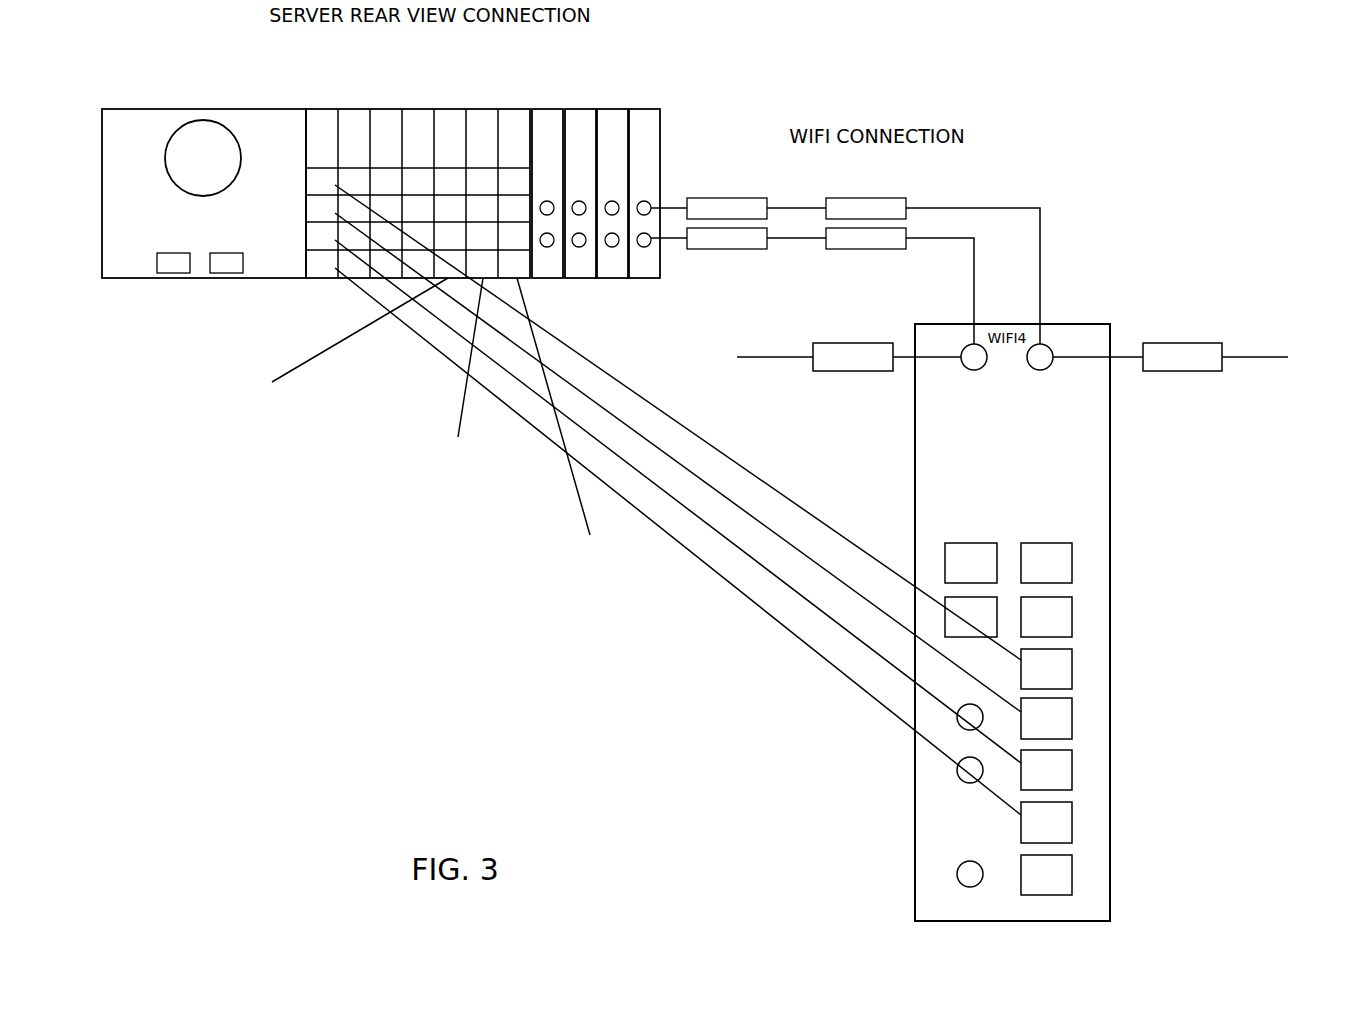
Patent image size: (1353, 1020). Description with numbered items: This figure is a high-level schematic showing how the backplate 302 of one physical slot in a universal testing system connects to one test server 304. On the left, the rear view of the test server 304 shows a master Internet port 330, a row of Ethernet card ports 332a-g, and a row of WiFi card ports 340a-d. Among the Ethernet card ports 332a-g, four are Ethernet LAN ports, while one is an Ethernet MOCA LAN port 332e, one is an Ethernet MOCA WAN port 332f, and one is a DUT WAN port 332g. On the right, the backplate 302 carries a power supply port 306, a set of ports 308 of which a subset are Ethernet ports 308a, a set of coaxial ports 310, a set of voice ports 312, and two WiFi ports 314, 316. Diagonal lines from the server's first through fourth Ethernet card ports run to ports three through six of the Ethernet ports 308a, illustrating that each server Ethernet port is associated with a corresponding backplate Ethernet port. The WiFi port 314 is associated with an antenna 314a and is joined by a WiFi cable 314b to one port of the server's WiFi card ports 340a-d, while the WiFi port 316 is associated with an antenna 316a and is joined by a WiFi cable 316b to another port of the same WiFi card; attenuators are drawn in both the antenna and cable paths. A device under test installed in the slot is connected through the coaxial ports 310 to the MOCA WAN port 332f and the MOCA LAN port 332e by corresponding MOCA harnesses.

The test server 304 is at (137, 109).
The master Internet port 330 is at (173, 274).
The Ethernet card ports 332a-g is at (306, 108).
The WiFi card ports 340a-d is at (532, 108).
The Ethernet MOCA LAN port 332e is at (335, 358).
The Ethernet MOCA WAN port 332f is at (452, 383).
The DUT WAN port 332g is at (575, 436).
The WiFi cable 316b is at (1000, 208).
The WiFi cable 314b is at (976, 283).
The WiFi port 314 is at (967, 346).
The antenna 314a is at (811, 357).
The WiFi port 316 is at (1047, 346).
The antenna 316a is at (1230, 350).
The backplate 302 is at (1095, 459).
The voice ports 312 is at (931, 556).
The set of ports 308 is at (1150, 719).
The Ethernet ports 308a is at (1114, 746).
The coaxial ports 310 is at (930, 752).
The power supply port 306 is at (957, 873).